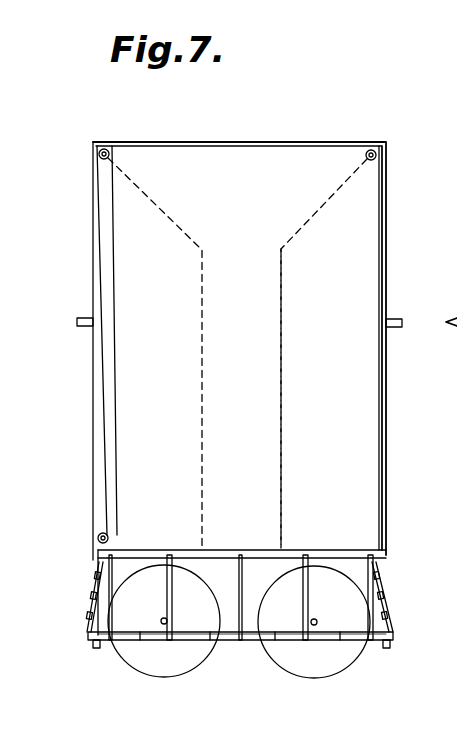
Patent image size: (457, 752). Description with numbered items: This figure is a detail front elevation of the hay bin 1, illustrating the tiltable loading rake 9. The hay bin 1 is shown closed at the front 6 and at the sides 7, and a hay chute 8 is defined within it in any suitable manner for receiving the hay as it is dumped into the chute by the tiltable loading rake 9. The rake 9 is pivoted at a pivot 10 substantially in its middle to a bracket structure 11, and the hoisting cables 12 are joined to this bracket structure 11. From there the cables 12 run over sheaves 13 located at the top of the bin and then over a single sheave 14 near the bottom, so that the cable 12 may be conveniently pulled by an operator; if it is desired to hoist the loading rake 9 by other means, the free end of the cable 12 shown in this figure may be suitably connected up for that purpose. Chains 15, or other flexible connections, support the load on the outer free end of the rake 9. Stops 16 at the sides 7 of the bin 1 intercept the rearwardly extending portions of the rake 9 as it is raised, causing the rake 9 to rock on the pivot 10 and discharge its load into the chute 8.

The hay bin 1 is at (258, 129).
The front 6 is at (355, 218).
The sides 7 is at (93, 223).
The hay chute 8 is at (281, 464).
The tiltable loading rake 9 is at (208, 643).
The pivot 10 is at (215, 641).
The bracket structure 11 is at (168, 598).
The hoisting cables 12 is at (96, 548).
The sheaves 13 is at (107, 152).
The single sheave 14 is at (99, 537).
The chains 15 is at (96, 596).
The stops 16 is at (78, 318).